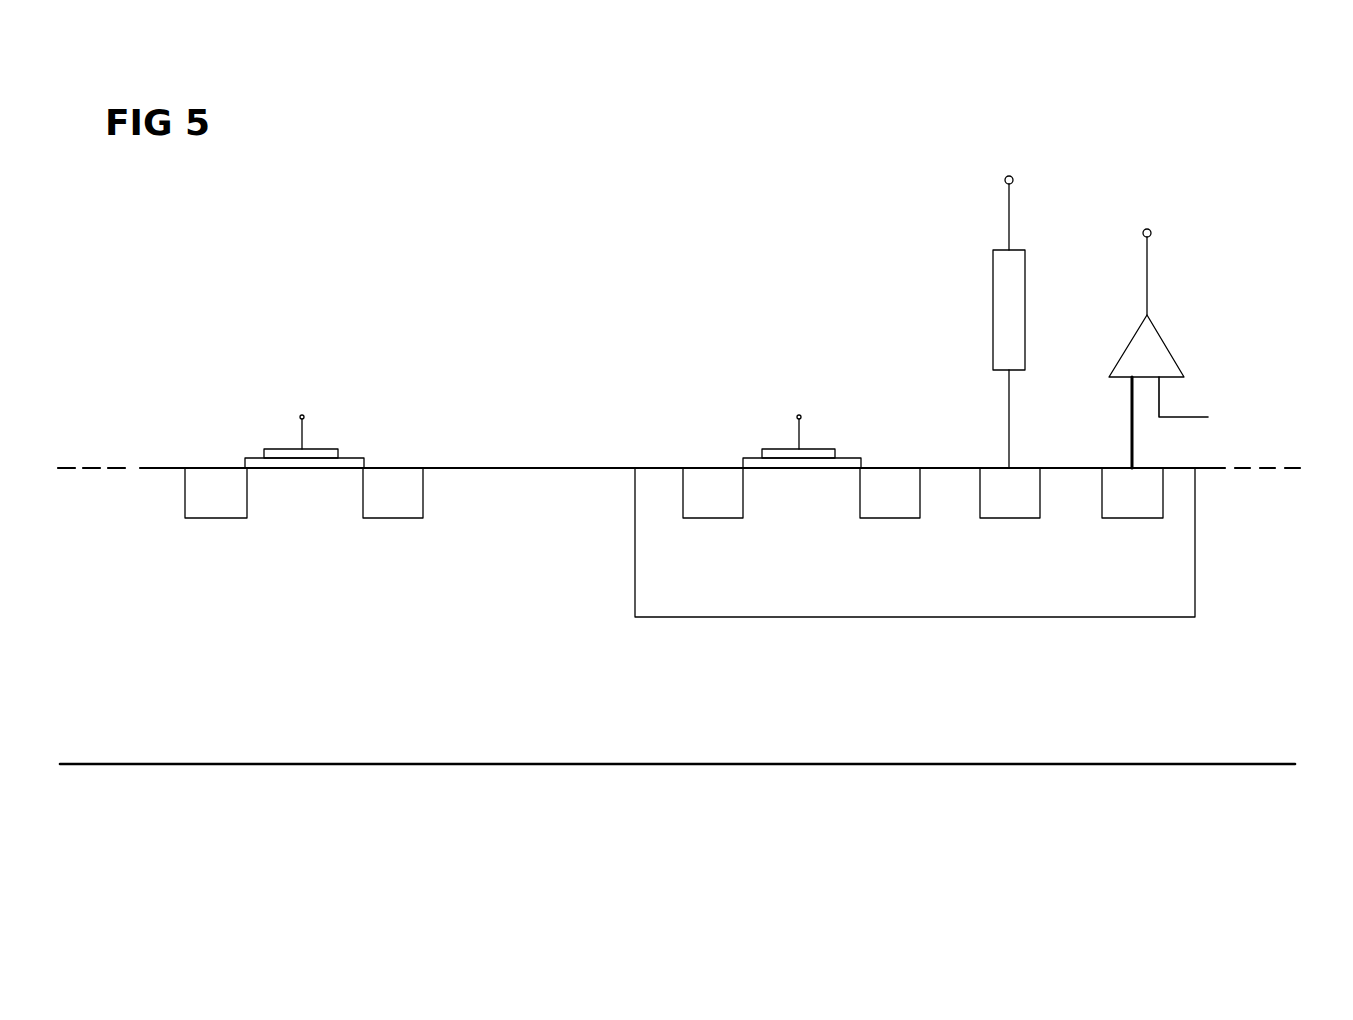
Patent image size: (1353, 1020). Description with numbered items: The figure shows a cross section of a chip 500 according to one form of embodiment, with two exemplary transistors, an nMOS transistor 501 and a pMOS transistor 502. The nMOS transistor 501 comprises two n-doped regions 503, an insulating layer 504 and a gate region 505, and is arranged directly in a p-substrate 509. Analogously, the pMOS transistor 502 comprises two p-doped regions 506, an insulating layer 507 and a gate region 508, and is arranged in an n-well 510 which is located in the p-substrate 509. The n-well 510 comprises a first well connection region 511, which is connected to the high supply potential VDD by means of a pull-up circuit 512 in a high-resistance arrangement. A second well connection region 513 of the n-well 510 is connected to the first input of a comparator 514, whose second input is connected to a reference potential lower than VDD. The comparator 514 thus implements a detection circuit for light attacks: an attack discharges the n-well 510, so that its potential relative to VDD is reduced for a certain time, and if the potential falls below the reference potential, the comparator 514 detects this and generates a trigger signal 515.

The chip 500 is at (1253, 172).
The nMOS transistor 501 is at (321, 430).
The pMOS transistor 502 is at (806, 425).
The n-doped regions 503 is at (223, 467).
The insulating layer 504 is at (355, 457).
The gate region 505 is at (287, 448).
The p-doped regions 506 is at (700, 467).
The insulating layer 507 is at (845, 457).
The gate region 508 is at (770, 448).
The p-substrate 509 is at (1077, 744).
The n-well 510 is at (1178, 590).
The first well connection region 511 is at (1020, 466).
The pull-up circuit 512 is at (1015, 310).
The second well connection region 513 is at (1193, 452).
The comparator 514 is at (1163, 338).
The trigger signal 515 is at (1148, 200).